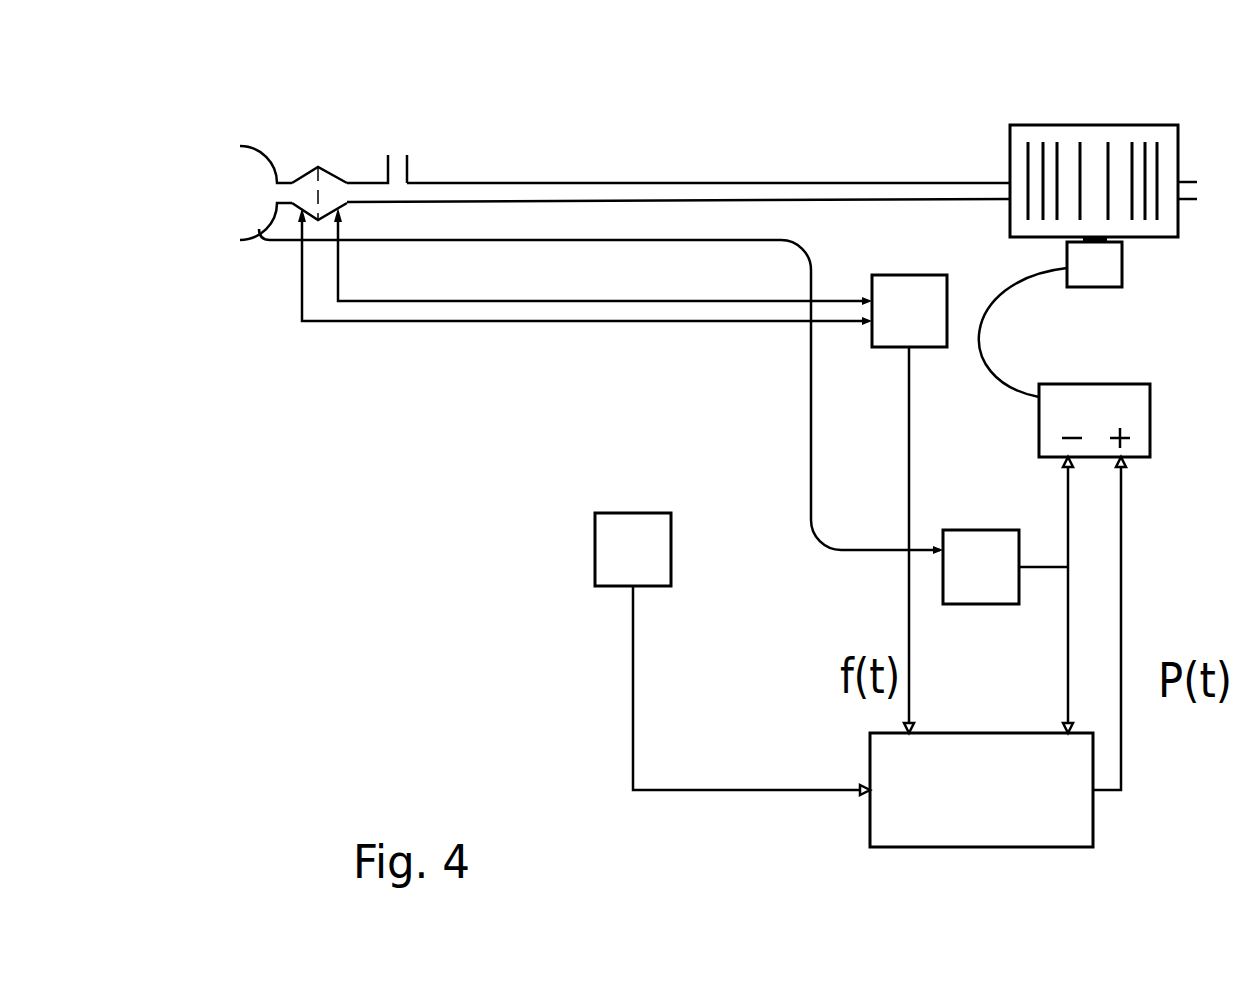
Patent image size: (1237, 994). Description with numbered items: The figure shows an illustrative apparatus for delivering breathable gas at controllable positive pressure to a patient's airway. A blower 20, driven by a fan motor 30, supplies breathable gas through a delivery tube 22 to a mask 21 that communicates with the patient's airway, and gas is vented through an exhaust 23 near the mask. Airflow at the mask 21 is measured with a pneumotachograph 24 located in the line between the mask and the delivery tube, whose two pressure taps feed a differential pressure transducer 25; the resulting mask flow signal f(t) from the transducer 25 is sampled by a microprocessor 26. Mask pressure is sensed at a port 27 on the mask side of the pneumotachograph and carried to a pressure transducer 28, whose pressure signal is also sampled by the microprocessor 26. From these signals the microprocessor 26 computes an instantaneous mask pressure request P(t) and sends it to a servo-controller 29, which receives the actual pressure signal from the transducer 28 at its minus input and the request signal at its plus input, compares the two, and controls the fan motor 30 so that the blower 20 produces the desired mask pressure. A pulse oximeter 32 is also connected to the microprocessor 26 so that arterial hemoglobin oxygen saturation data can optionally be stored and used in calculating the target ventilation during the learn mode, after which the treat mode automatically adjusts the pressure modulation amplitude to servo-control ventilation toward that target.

The blower 20 is at (1103, 134).
The mask 21 is at (239, 193).
The delivery tube 22 is at (678, 159).
The exhaust 23 is at (387, 128).
The pneumotachograph 24 is at (315, 165).
The differential pressure transducer 25 is at (622, 470).
The microprocessor 26 is at (998, 652).
The port 27 is at (579, 391).
The pressure transducer 28 is at (1008, 595).
The servo-controller 29 is at (1126, 416).
The fan motor 30 is at (1081, 316).
The pulse oximeter 32 is at (732, 628).